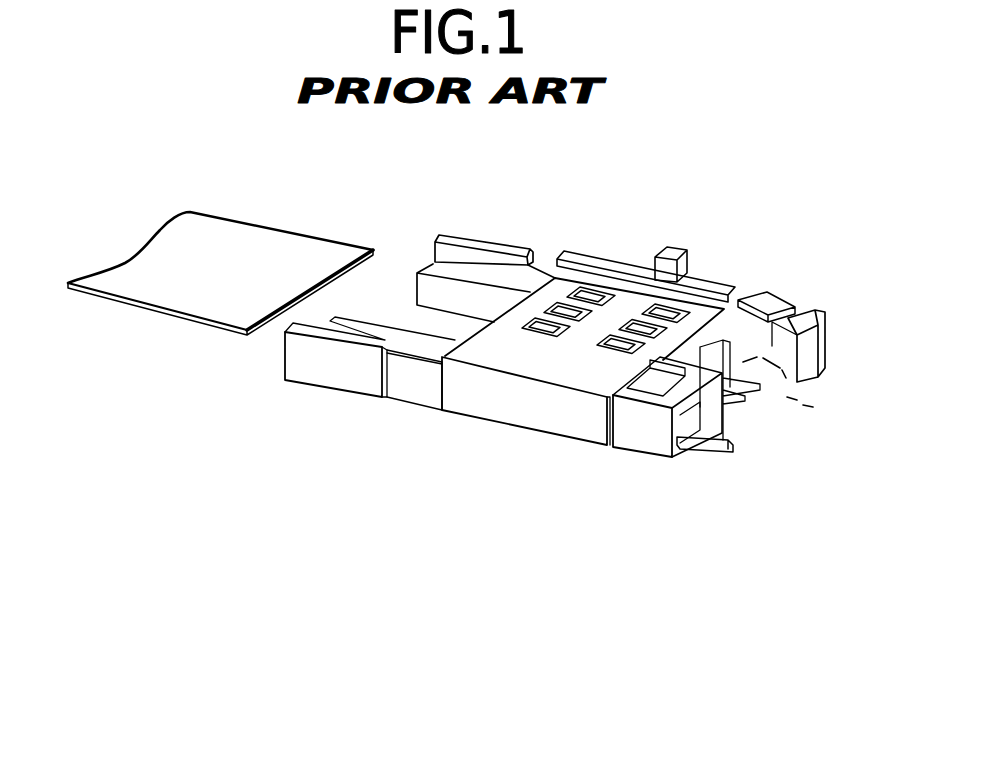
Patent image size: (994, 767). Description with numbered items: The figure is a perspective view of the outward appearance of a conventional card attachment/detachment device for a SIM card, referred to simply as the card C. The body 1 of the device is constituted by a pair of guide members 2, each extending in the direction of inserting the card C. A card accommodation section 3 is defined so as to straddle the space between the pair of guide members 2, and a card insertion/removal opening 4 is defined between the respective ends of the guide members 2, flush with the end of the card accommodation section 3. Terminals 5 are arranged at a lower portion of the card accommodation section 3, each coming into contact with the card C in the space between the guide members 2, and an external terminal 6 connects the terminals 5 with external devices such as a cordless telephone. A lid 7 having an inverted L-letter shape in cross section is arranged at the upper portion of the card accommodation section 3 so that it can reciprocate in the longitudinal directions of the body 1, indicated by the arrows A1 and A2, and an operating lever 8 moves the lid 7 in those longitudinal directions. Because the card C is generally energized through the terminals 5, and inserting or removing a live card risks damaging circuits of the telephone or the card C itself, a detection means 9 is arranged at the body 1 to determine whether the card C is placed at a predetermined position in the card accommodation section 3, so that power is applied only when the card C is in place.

The body 1 is at (666, 173).
The guide members 2 is at (637, 437).
The card accommodation section 3 is at (790, 318).
The card insertion/removal opening 4 is at (436, 262).
The terminals 5 is at (663, 360).
The external terminal 6 is at (748, 388).
The lid 7 is at (567, 370).
The operating lever 8 is at (678, 247).
The detection means 9 is at (733, 448).
The card C is at (252, 236).
The arrow A1 is at (327, 295).
The arrow A2 is at (113, 242).